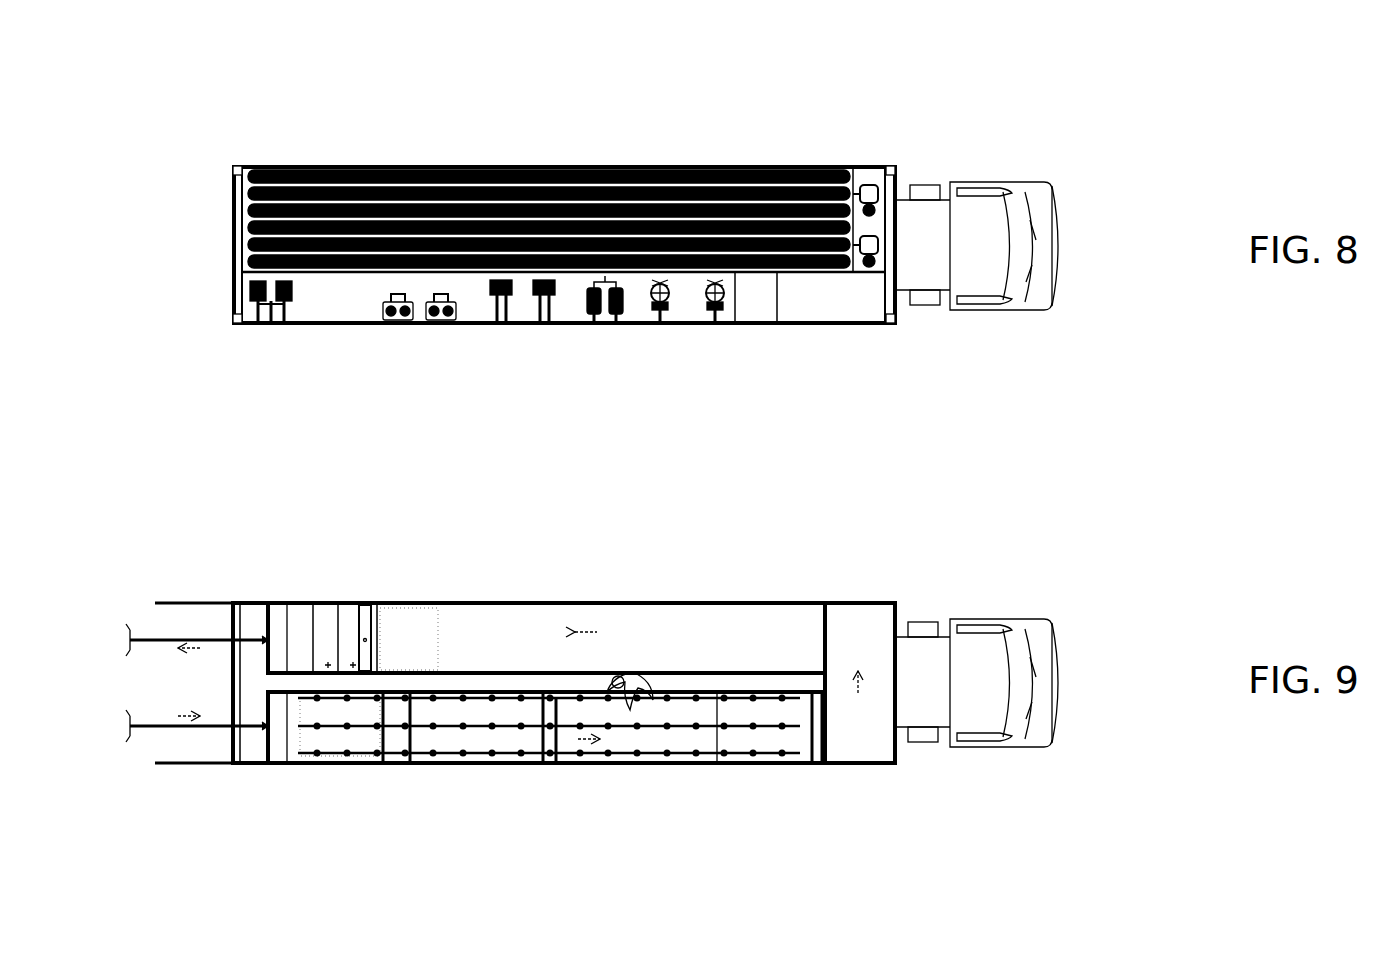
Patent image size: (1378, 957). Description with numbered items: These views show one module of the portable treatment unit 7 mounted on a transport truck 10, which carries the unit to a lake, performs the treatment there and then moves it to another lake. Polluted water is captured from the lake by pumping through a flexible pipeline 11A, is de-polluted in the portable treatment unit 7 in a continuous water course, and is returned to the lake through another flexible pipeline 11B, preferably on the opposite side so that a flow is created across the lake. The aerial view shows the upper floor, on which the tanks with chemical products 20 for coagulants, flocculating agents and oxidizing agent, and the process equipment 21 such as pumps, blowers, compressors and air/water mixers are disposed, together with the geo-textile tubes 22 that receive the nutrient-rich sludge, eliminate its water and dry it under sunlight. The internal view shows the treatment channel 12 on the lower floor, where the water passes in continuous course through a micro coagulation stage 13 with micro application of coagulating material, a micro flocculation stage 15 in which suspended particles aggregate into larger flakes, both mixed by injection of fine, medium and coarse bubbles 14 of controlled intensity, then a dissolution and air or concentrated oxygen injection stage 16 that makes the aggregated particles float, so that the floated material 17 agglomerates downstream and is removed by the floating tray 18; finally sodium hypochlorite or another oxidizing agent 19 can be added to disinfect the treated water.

In FIG. 8, the portable treatment unit 7 is at (555, 138).
In FIG. 9, the portable treatment unit 7 is at (543, 575).
In FIG. 8, the transport truck 10 is at (985, 170).
In FIG. 9, the transport truck 10 is at (985, 615).
In FIG. 9, the flexible pipeline 11A is at (192, 733).
In FIG. 9, the flexible pipeline 11B is at (190, 638).
In FIG. 9, the treatment channel 12 is at (632, 670).
In FIG. 9, the micro coagulation stage 13 is at (410, 768).
In FIG. 9, the fine, medium and coarse bubbles 14 is at (467, 732).
In FIG. 9, the micro flocculation stage 15 is at (542, 768).
In FIG. 9, the dissolution and air or concentrated oxygen injection stage 16 is at (812, 768).
In FIG. 9, the floated material 17 is at (408, 640).
In FIG. 9, the floating tray 18 is at (365, 601).
In FIG. 9, the sodium hypochlorite or another oxidizing agent 19 is at (307, 638).
In FIG. 8, the tanks with chemical products 20 is at (762, 307).
In FIG. 8, the process equipment 21 is at (870, 165).
In FIG. 8, the geo-textile tubes 22 is at (670, 165).